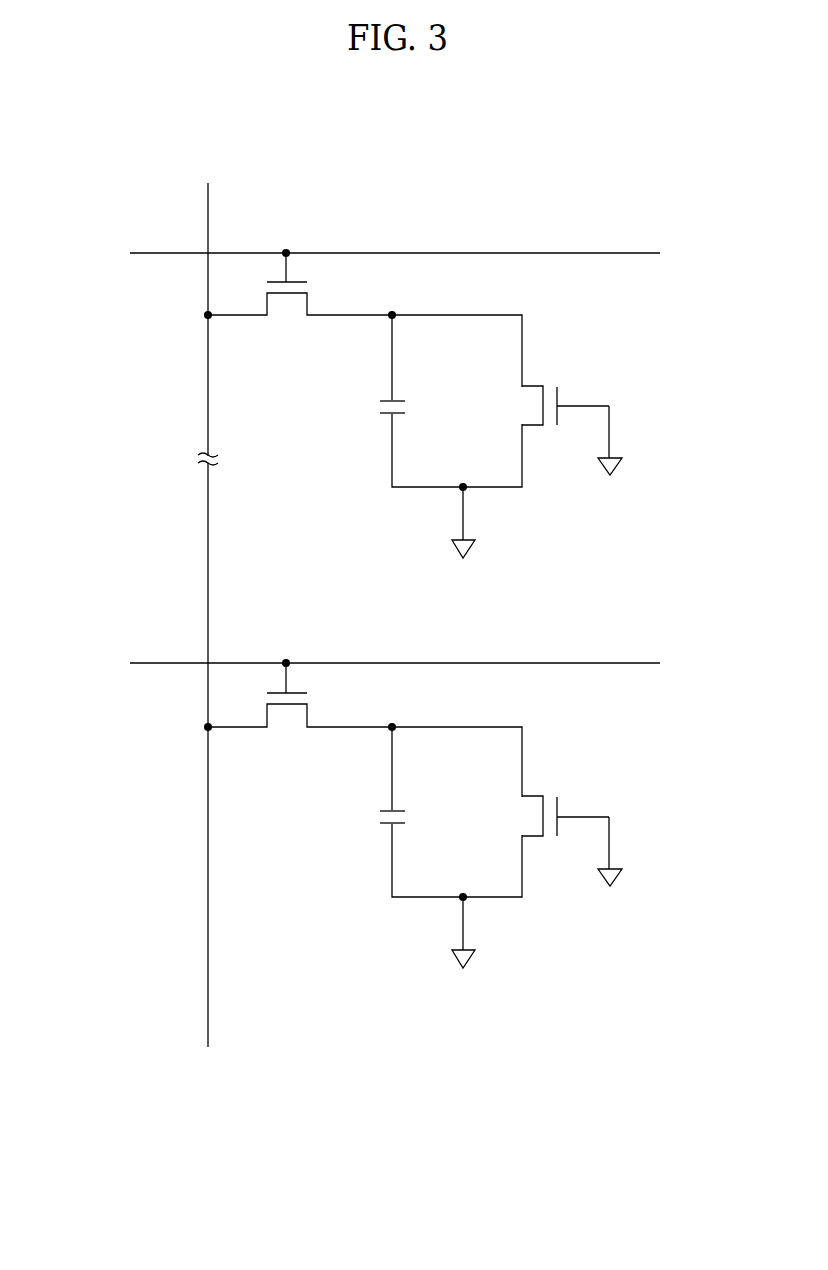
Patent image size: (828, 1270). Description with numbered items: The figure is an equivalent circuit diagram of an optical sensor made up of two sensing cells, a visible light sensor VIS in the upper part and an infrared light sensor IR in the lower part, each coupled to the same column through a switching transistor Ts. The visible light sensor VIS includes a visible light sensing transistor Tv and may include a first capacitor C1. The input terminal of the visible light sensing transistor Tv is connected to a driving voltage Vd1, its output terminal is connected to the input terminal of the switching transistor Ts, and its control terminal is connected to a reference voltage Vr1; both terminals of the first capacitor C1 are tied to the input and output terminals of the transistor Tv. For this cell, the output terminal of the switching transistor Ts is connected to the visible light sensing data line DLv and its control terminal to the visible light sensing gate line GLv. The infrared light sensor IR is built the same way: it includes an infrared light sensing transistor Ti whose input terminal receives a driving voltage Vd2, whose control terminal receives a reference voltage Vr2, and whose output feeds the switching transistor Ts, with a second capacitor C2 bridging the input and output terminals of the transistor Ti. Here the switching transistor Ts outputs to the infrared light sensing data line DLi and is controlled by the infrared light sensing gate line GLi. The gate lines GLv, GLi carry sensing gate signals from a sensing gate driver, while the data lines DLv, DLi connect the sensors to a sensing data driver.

The visible light sensing data line DLv is at (207, 395).
The infrared light sensing data line DLi is at (206, 863).
The visible light sensing gate line GLv is at (371, 252).
The infrared light sensing gate line GLi is at (371, 663).
The switching transistor Ts is at (298, 506).
The visible light sensor VIS is at (384, 497).
The first capacitor C1 is at (376, 410).
The visible light sensing transistor Tv is at (564, 386).
The reference voltage Vr1 is at (608, 460).
The driving voltage Vd1 is at (461, 541).
The infrared light sensor IR is at (385, 908).
The second capacitor C2 is at (376, 820).
The infrared light sensing transistor Ti is at (564, 796).
The reference voltage Vr2 is at (608, 871).
The driving voltage Vd2 is at (462, 951).